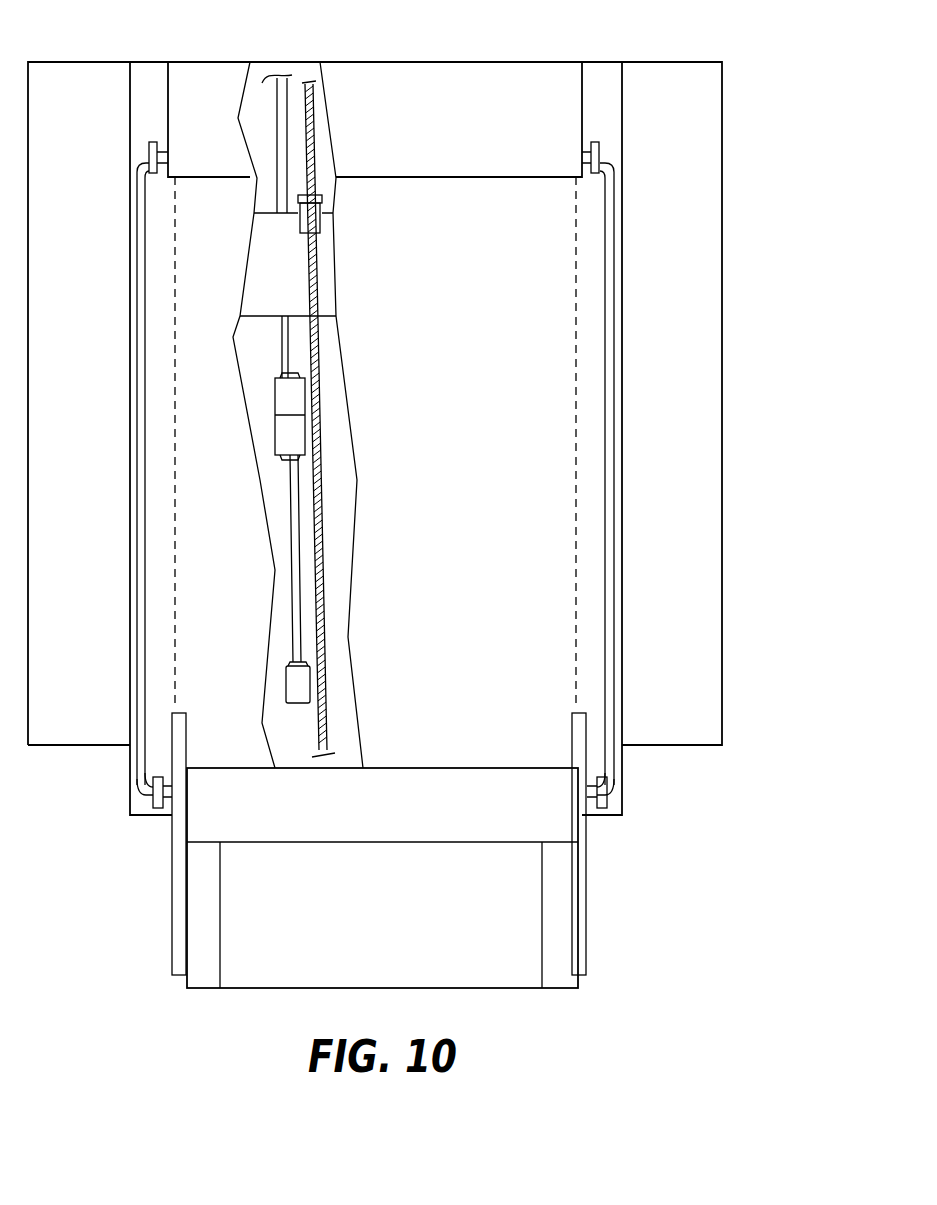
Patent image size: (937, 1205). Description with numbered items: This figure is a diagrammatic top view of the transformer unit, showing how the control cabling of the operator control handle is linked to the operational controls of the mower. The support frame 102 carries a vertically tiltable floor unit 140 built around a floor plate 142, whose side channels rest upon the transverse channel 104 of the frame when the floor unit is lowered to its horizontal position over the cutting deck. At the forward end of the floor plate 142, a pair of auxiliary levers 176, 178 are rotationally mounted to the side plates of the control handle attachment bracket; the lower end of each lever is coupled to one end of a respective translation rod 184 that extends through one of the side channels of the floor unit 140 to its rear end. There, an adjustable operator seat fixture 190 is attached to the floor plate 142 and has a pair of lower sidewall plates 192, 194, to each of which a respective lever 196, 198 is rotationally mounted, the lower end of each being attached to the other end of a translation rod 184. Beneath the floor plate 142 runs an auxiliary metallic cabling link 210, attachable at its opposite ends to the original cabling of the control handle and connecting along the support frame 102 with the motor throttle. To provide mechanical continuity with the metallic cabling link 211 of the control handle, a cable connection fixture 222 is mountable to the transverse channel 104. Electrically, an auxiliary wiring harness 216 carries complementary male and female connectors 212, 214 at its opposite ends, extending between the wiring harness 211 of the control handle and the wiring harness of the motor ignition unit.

The support frame 102 is at (720, 109).
The transverse channel member 104 is at (272, 270).
The floor unit 140 is at (623, 525).
The floor plate 142 is at (484, 307).
The auxiliary lever 176 is at (149, 152).
The auxiliary lever 178 is at (599, 148).
The translation rod 184 is at (145, 358).
The operator seat fixture 190 is at (519, 988).
The lower sidewall plate 192 is at (180, 906).
The lower sidewall plate 194 is at (586, 893).
The lever 196 is at (153, 800).
The lever 198 is at (607, 799).
The auxiliary cabling link 210 is at (330, 512).
The metallic cabling link 211 is at (275, 97).
The connector 212 is at (288, 432).
The connector 214 is at (297, 686).
The auxiliary wiring harness 216 is at (293, 524).
The cable connection fixture 222 is at (322, 207).